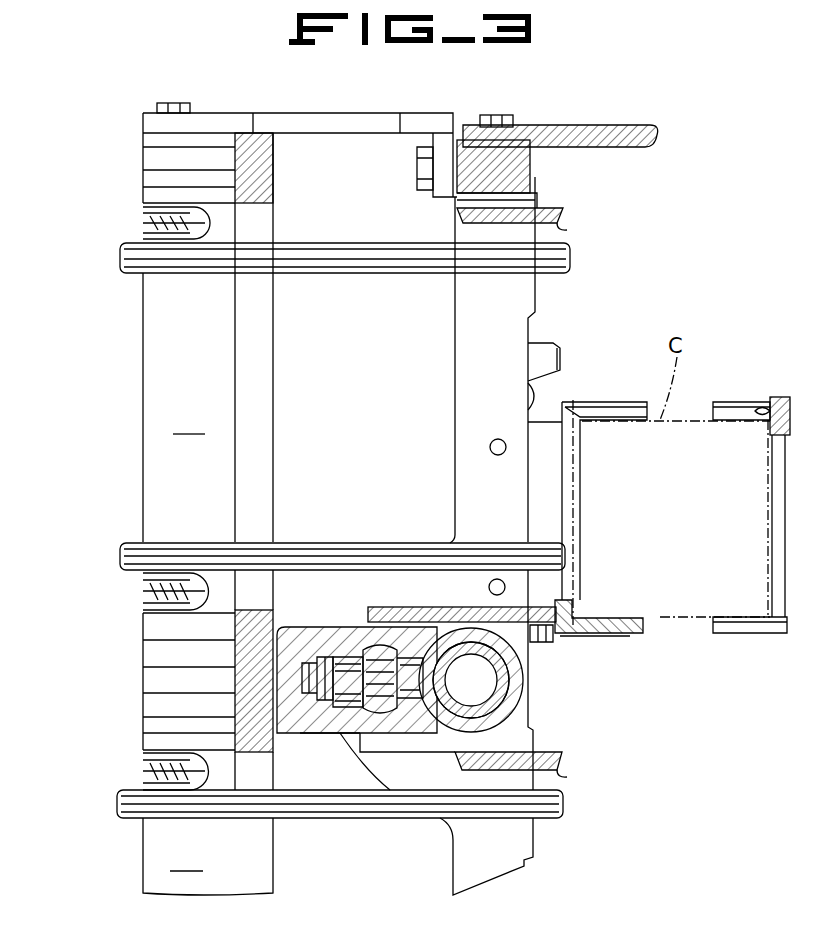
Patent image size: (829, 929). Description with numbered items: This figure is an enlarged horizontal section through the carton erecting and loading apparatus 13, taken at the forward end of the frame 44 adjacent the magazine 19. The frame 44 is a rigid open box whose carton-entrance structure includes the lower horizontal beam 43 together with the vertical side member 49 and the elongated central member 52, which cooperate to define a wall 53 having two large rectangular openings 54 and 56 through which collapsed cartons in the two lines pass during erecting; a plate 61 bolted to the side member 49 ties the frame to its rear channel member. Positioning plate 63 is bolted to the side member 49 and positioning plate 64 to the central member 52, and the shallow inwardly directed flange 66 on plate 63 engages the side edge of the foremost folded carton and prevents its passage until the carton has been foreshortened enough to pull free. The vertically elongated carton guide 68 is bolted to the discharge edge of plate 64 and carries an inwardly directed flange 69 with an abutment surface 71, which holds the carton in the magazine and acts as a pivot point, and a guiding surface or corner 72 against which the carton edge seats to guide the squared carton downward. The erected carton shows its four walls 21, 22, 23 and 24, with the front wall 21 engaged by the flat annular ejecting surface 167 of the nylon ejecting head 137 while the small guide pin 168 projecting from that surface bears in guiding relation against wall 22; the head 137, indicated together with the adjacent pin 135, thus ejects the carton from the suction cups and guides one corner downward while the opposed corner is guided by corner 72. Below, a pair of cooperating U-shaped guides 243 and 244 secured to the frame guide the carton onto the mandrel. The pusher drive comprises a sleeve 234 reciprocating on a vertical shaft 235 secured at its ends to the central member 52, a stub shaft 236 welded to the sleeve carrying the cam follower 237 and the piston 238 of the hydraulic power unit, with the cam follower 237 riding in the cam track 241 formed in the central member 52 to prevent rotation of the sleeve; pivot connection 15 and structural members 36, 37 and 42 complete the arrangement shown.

The apparatus 13 is at (693, 207).
The pivot connection 15 is at (543, 681).
The magazine 19 is at (150, 371).
The front wall 21 is at (768, 533).
The wall 22 is at (697, 427).
The wall 23 is at (675, 613).
The wall 24 is at (583, 480).
The rod 36 is at (577, 252).
The rod 37 is at (398, 542).
The lug 42 is at (550, 348).
The lower horizontal beam 43 is at (473, 352).
The frame 44 is at (457, 378).
The vertical side member 49 is at (513, 143).
The central member 52 is at (293, 633).
The wall 53 is at (457, 330).
The rectangular opening 54 is at (467, 310).
The rectangular opening 56 is at (462, 853).
The plate 61 is at (587, 133).
The positioning plate 63 is at (553, 207).
The positioning plate 64 is at (413, 608).
The flange 66 is at (567, 230).
The carton guide 68 is at (633, 635).
The flange 69 is at (578, 608).
The abutment surface 71 is at (543, 607).
The guiding surface 72 is at (563, 595).
The pin 135 is at (764, 396).
The ejecting head 137 is at (783, 397).
The ejecting surface 167 is at (767, 430).
The guide pin 168 is at (770, 420).
The sleeve 234 is at (507, 725).
The vertical shaft 235 is at (480, 690).
The stub shaft 236 is at (413, 703).
The cam follower 237 is at (347, 703).
The piston 238 is at (373, 645).
The cam track 241 is at (317, 707).
The U-shaped guide 243 is at (567, 400).
The U-shaped guide 244 is at (773, 627).